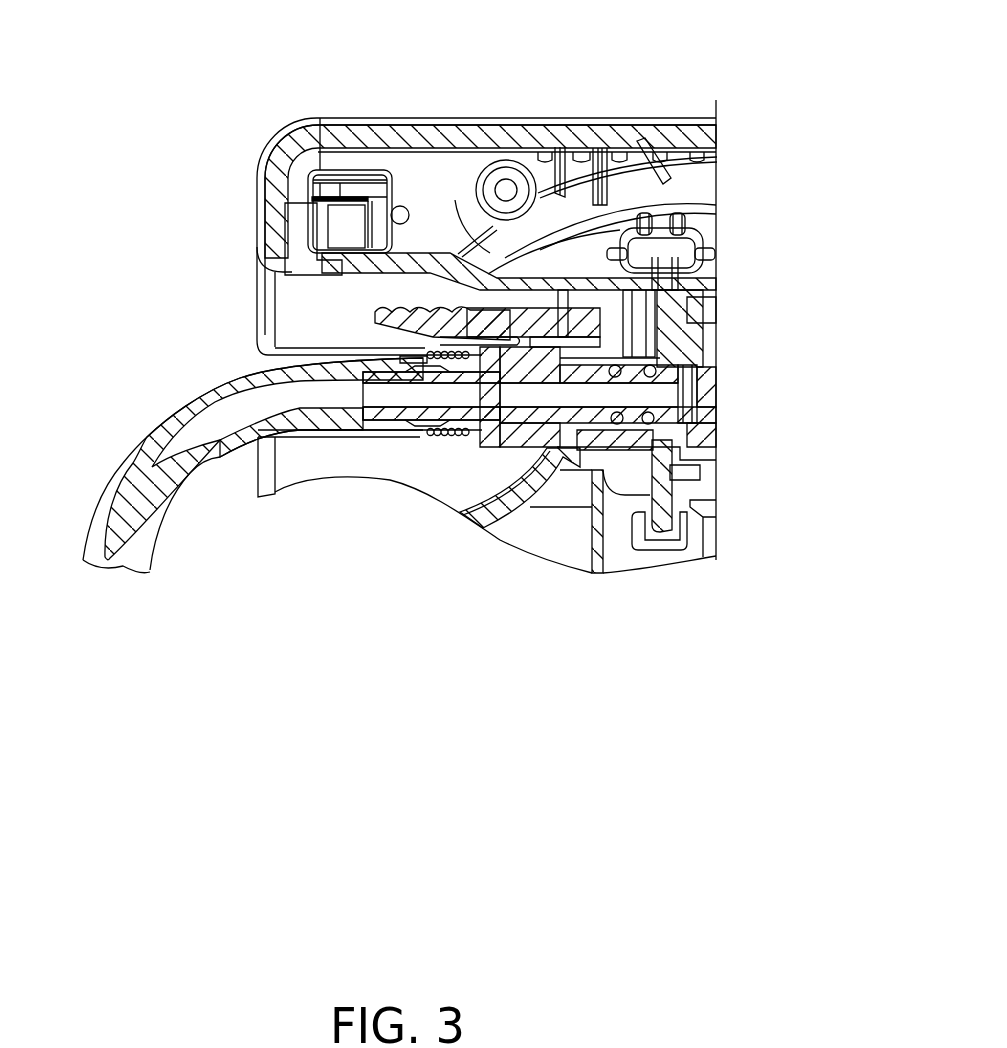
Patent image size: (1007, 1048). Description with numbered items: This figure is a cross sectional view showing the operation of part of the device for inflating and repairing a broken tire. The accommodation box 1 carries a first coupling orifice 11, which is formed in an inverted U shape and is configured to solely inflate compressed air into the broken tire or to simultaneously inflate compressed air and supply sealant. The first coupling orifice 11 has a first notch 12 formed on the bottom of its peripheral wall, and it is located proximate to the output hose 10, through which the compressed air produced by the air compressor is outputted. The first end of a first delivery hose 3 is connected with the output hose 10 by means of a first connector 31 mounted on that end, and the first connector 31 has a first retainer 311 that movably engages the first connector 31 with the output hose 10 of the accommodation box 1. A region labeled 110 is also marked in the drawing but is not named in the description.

The accommodation box 1 is at (323, 140).
The first delivery hose 3 is at (187, 405).
The output hose 10 is at (713, 352).
The first coupling orifice 11 is at (330, 326).
The first notch 12 is at (305, 262).
The first connector 31 is at (548, 378).
The plate 110 is at (462, 248).
The first retainer 311 is at (618, 353).